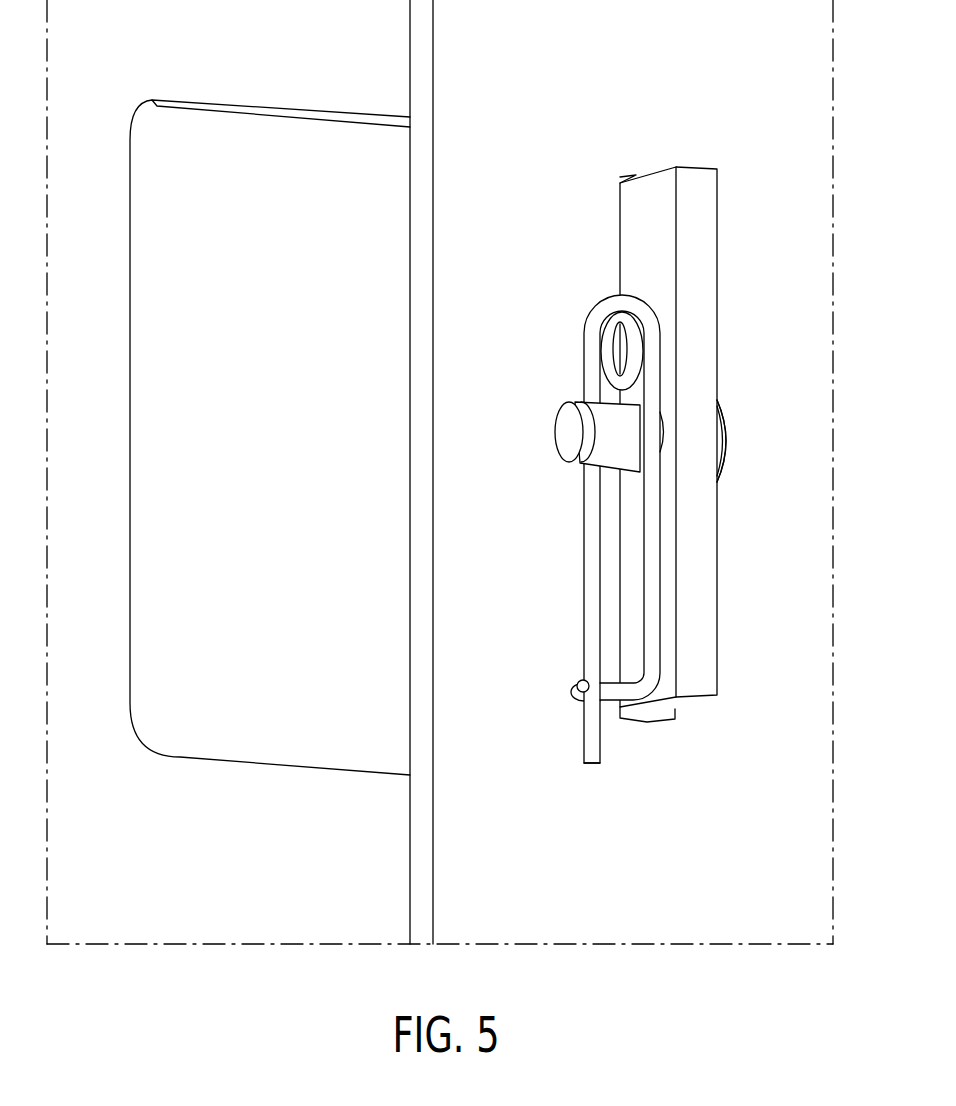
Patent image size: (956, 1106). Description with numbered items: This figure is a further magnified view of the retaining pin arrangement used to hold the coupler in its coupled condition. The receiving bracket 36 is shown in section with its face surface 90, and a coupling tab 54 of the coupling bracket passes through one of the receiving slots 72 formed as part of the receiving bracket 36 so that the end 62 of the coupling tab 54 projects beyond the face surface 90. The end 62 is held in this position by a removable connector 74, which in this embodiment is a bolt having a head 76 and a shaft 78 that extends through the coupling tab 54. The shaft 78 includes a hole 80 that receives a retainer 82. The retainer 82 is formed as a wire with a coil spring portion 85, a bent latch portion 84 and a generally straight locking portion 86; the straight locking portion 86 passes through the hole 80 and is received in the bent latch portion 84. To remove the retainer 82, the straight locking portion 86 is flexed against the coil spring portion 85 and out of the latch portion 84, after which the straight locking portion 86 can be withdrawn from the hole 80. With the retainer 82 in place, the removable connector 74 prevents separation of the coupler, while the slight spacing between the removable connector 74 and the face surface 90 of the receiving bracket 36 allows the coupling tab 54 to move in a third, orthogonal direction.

The receiving bracket 36 is at (410, 612).
The face surface 90 is at (470, 287).
The coupling tab 54 is at (684, 391).
The end 62 is at (693, 231).
The receiving slot 72 is at (622, 173).
The removable connector 74 is at (745, 445).
The head 76 is at (720, 404).
The shaft 78 is at (556, 453).
The hole 80 is at (587, 465).
The retainer 82 is at (590, 477).
The bent latch portion 84 is at (568, 683).
The coil spring portion 85 is at (602, 298).
The straight locking portion 86 is at (590, 747).